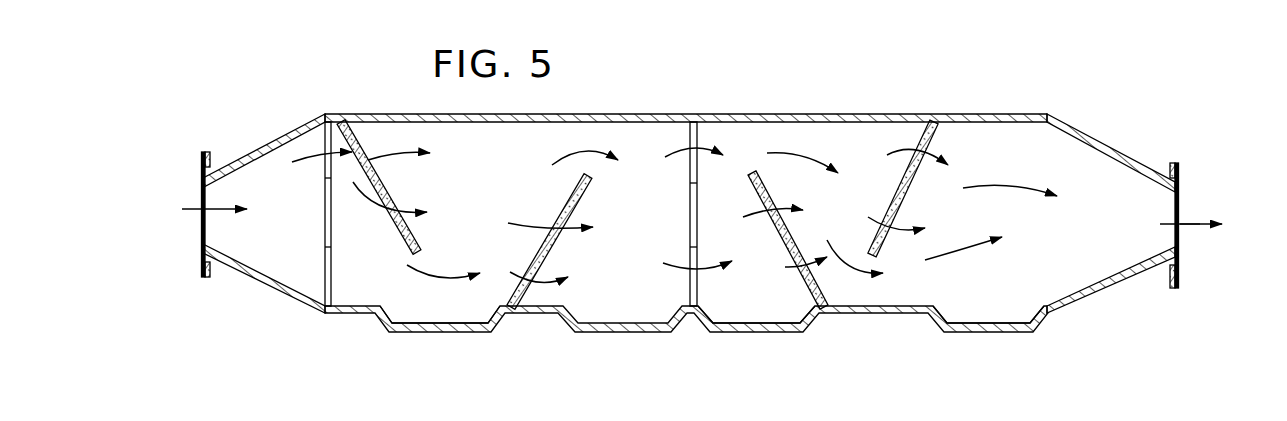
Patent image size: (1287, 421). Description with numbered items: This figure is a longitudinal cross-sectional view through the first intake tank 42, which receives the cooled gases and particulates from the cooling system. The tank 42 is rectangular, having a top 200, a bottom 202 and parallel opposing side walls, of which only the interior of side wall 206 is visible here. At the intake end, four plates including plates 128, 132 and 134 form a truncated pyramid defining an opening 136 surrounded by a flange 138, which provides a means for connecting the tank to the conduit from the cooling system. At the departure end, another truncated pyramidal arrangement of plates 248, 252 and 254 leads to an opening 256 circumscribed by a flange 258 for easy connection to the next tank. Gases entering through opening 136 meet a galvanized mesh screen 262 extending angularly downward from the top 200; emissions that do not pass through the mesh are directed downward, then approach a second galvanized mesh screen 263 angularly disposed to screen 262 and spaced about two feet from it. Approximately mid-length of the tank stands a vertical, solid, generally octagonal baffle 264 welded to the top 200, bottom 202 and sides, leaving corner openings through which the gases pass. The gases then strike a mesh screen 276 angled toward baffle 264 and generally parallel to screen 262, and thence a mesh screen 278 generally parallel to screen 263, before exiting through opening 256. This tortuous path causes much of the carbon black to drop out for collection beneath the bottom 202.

The first intake tank 42 is at (412, 111).
The intake end plate 128 is at (264, 142).
The intake end plate 132 is at (265, 285).
The intake end plate 134 is at (306, 198).
The intake opening 136 is at (201, 235).
The intake flange 138 is at (203, 152).
The top 200 is at (758, 113).
The bottom 202 is at (888, 313).
The side wall 206 is at (992, 222).
The departure end plate 248 is at (1108, 150).
The departure end plate 252 is at (1120, 288).
The departure end plate 254 is at (1128, 234).
The departure opening 256 is at (1182, 248).
The departure flange 258 is at (1180, 172).
The first galvanized mesh screen 262 is at (394, 188).
The second galvanized mesh screen 263 is at (553, 250).
The solid baffle 264 is at (690, 212).
The mesh screen 276 is at (770, 193).
The mesh screen 278 is at (938, 157).